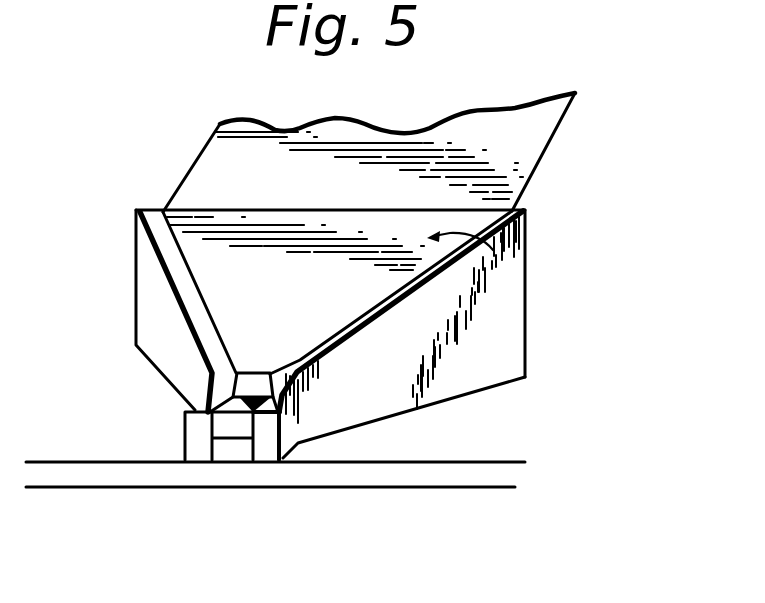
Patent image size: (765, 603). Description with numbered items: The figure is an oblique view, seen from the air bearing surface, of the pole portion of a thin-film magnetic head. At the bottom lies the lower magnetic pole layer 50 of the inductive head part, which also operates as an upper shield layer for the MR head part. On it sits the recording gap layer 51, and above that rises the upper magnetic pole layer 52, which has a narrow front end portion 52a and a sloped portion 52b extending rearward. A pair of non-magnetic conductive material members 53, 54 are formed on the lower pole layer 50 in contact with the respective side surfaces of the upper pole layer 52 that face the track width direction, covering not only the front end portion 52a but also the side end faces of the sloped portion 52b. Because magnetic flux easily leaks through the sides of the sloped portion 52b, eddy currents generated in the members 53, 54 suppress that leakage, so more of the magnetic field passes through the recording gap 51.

The lower magnetic pole layer 50 is at (428, 478).
The recording gap layer 51 is at (240, 452).
The upper magnetic pole layer 52 is at (227, 307).
The front end portion 52a is at (236, 400).
The sloped portion 52b is at (483, 234).
The non-magnetic conductive material member 53 is at (195, 445).
The non-magnetic conductive material member 54 is at (287, 462).